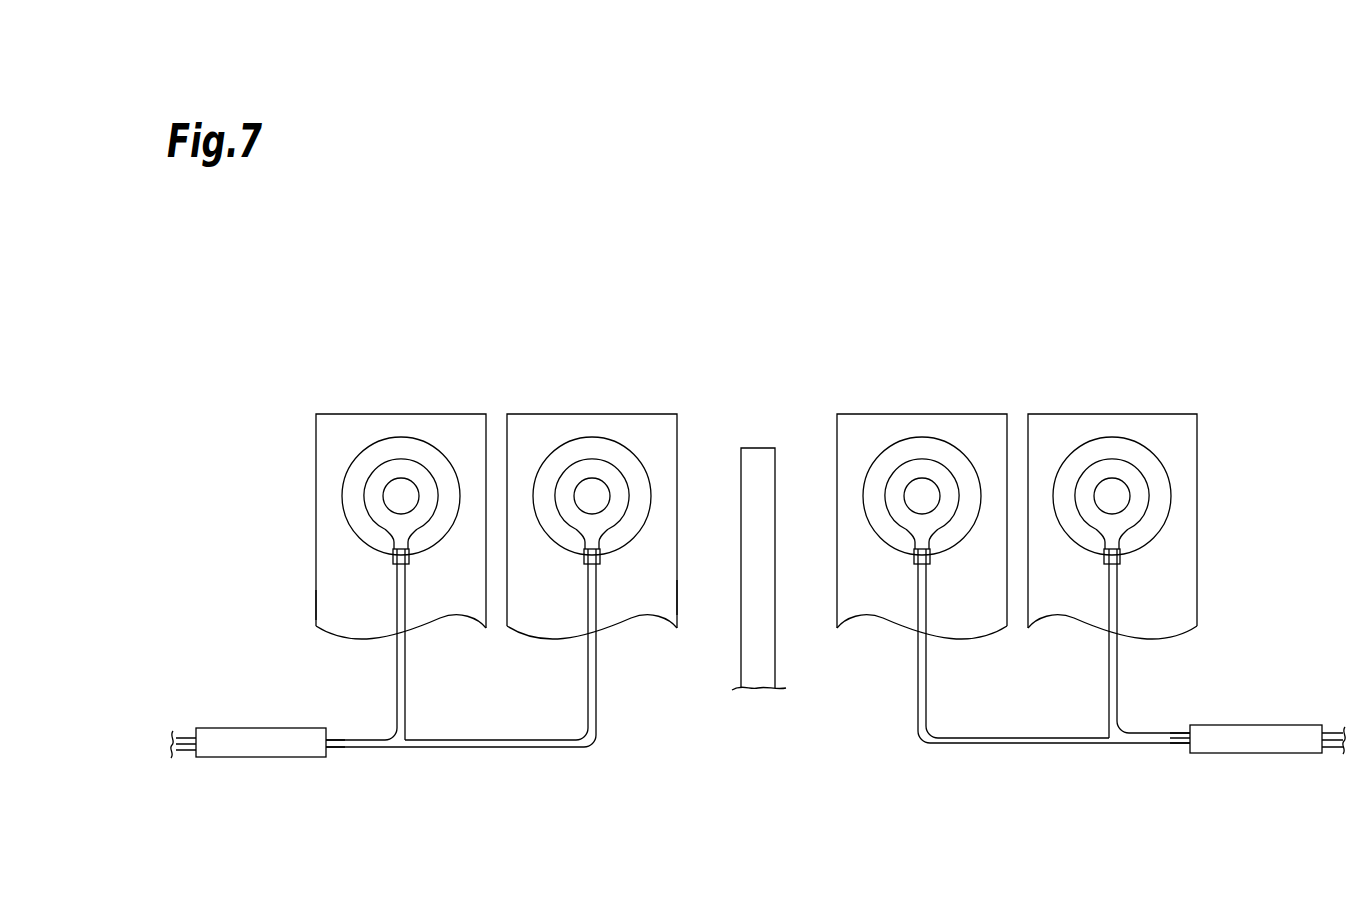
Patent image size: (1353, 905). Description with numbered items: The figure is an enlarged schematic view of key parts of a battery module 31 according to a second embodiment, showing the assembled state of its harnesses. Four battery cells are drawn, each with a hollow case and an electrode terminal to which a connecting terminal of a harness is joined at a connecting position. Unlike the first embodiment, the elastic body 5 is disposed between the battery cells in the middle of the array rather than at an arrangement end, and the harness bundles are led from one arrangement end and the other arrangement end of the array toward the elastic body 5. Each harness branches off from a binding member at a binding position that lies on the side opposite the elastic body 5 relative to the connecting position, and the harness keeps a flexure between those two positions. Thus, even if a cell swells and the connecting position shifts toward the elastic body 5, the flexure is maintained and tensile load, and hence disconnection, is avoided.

The battery module 31 is at (296, 302).
The elastic body 5 is at (758, 448).